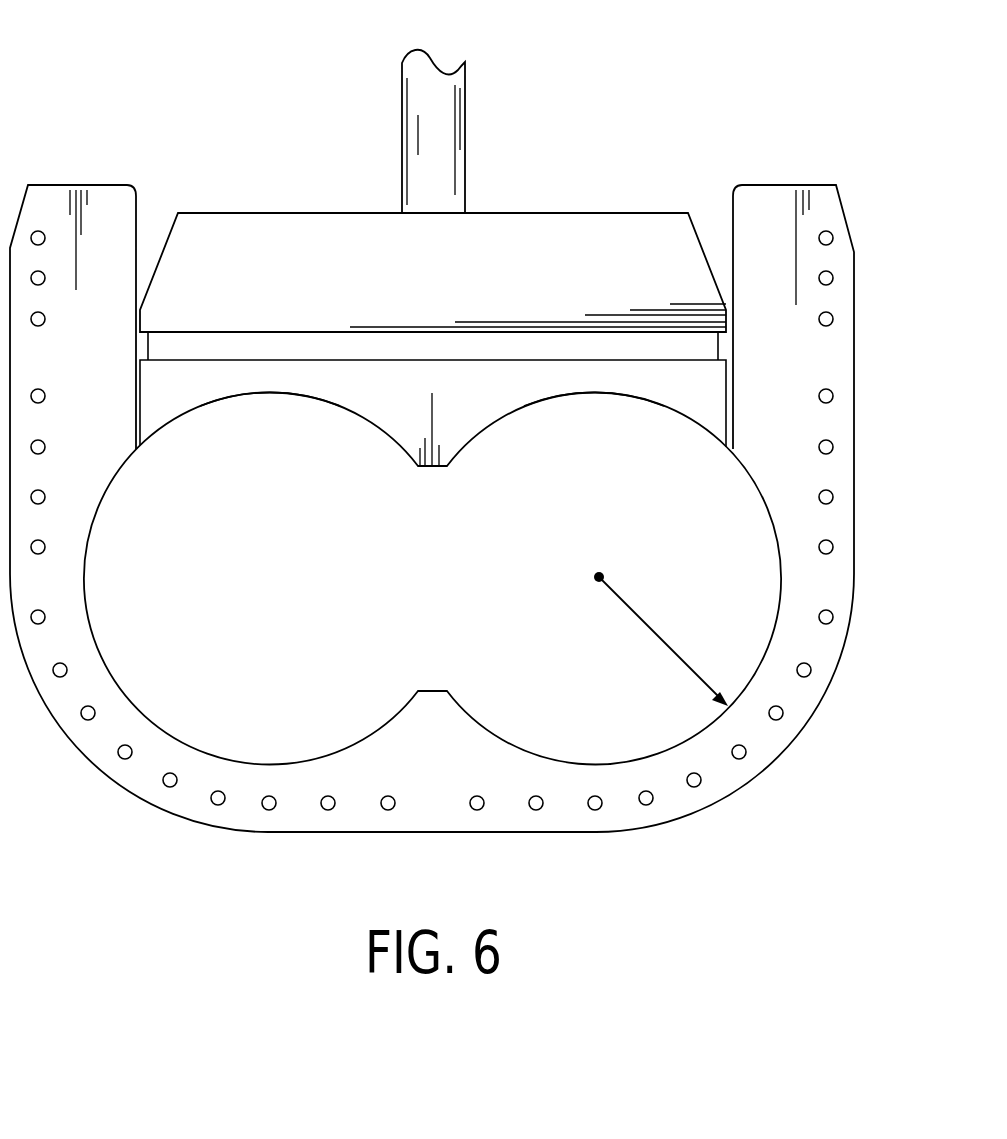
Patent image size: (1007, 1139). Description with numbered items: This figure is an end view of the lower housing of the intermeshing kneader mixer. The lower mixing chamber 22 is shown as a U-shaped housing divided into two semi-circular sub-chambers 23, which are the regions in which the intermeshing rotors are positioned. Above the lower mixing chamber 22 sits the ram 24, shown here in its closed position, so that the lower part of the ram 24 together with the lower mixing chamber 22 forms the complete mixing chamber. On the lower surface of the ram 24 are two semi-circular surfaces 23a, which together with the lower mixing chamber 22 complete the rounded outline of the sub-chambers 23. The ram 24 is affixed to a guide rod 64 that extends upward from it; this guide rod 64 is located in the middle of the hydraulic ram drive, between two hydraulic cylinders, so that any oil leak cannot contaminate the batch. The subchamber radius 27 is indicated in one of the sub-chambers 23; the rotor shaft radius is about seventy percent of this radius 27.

The lower mixing chamber 22 is at (843, 268).
The semi-circular sub-chambers 23 is at (264, 624).
The semi-circular surfaces 23a is at (270, 393).
The ram 24 is at (467, 276).
The mixing chamber or subchamber radius 27 is at (648, 632).
The guide rod 64 is at (456, 117).